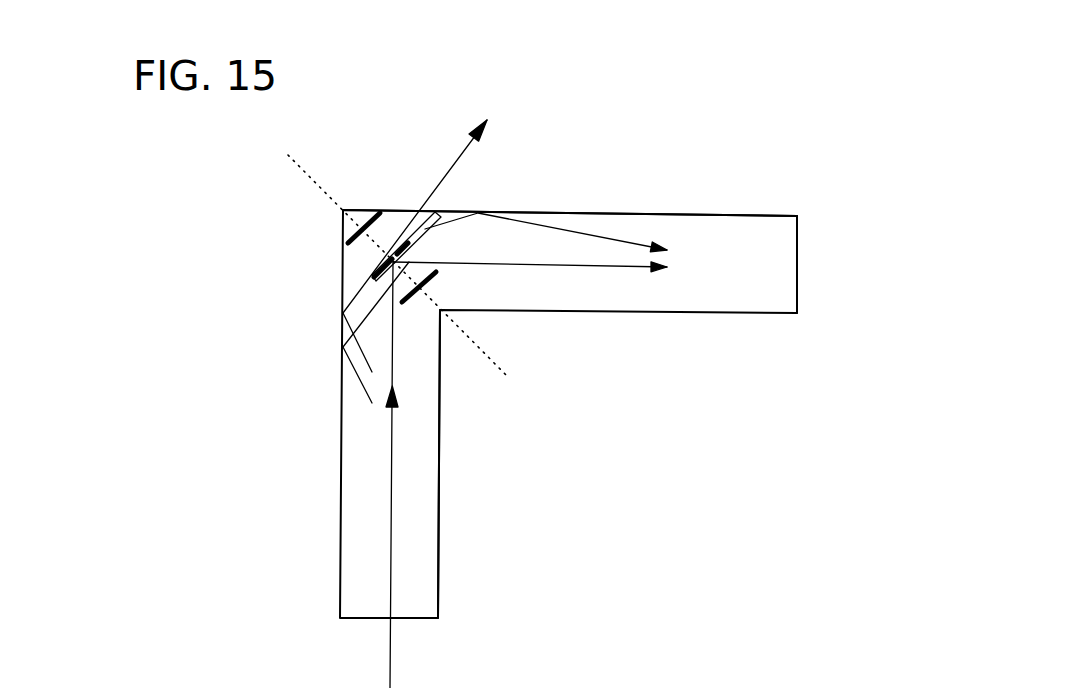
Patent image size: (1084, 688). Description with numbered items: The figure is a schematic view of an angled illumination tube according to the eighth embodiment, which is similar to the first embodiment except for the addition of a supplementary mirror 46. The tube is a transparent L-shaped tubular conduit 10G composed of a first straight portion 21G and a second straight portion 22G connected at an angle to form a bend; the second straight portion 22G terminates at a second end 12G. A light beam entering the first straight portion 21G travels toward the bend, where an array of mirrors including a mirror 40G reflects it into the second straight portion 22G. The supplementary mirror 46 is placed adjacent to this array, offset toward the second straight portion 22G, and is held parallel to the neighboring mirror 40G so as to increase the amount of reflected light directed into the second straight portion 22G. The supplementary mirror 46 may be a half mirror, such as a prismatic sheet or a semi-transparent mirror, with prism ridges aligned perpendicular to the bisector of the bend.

The L-shaped tubular conduit 10G is at (690, 313).
The second end 12G is at (800, 255).
The second straight portion 22G is at (690, 215).
The first straight portion 21G is at (438, 509).
The mirror 40G is at (343, 223).
The supplementary mirror 46 is at (440, 227).